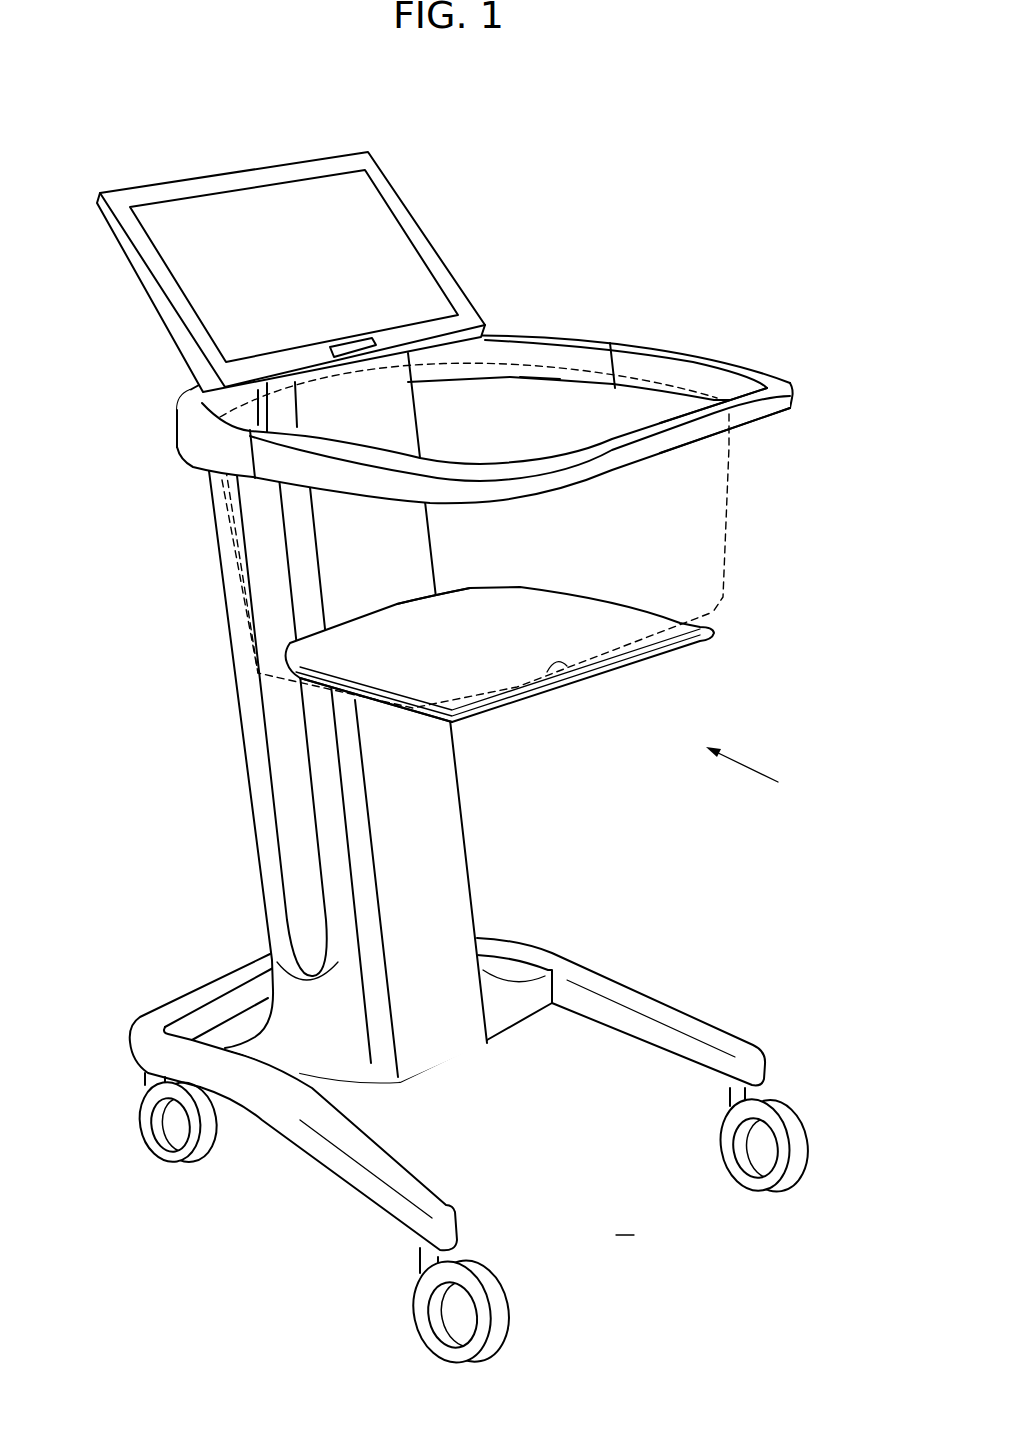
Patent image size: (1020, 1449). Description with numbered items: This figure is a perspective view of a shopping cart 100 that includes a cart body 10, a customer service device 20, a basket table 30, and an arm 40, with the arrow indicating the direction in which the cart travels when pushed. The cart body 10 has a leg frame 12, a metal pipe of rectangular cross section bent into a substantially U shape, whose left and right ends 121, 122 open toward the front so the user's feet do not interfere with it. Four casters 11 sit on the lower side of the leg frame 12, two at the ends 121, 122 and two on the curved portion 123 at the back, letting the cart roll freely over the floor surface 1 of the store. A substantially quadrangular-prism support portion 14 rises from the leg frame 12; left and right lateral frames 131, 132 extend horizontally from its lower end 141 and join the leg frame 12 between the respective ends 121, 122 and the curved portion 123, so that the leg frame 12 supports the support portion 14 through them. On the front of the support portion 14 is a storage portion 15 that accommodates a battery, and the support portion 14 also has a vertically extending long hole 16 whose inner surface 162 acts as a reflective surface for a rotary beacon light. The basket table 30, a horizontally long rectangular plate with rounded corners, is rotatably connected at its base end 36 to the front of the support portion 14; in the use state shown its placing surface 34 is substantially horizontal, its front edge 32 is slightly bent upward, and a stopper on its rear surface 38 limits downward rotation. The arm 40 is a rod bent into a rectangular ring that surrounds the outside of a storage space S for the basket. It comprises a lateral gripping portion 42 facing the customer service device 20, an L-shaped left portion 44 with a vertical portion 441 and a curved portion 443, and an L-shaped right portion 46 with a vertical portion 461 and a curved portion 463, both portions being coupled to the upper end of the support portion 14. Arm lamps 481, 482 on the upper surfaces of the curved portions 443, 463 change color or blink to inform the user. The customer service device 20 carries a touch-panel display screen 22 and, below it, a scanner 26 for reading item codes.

The shopping cart 100 is at (742, 228).
The floor surface 1 is at (625, 1220).
The cart body 10 is at (232, 620).
The casters 11 is at (145, 1110).
The leg frame 12 is at (464, 1074).
The left end of the leg frame 121 is at (455, 1210).
The right end of the leg frame 122 is at (757, 1045).
The curved portion 123 is at (205, 975).
The left lateral frame 131 is at (277, 1047).
The right lateral frame 132 is at (515, 1007).
The lower end of the support portion 141 is at (350, 1082).
The support portion 14 is at (273, 761).
The storage portion 15 is at (445, 862).
The long hole 16 is at (273, 718).
The inner surface 162 is at (250, 535).
The customer service device 20 is at (297, 234).
The display screen 22 is at (375, 212).
The scanner 26 is at (353, 340).
The basket table 30 is at (500, 665).
The edge 32 is at (556, 667).
The placing surface 34 is at (517, 610).
The base end 36 is at (397, 603).
The rear surface 38 is at (400, 720).
The arm 40 is at (440, 351).
The gripping portion 42 is at (650, 452).
The left portion 44 is at (431, 500).
The vertical portion 441 is at (363, 477).
The curved portion 443 is at (178, 432).
The right portion 46 is at (648, 332).
The vertical portion 461 is at (697, 348).
The curved portion 463 is at (533, 372).
The arm lamp 481 is at (188, 394).
The arm lamp 482 is at (533, 325).
The storage space S is at (735, 538).